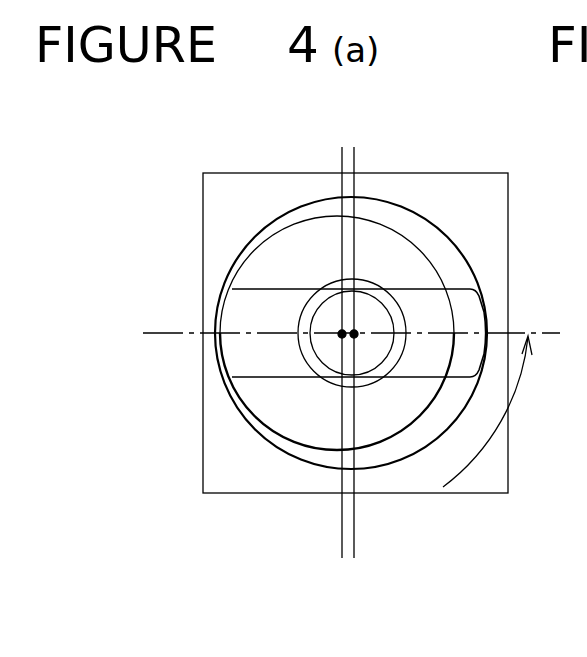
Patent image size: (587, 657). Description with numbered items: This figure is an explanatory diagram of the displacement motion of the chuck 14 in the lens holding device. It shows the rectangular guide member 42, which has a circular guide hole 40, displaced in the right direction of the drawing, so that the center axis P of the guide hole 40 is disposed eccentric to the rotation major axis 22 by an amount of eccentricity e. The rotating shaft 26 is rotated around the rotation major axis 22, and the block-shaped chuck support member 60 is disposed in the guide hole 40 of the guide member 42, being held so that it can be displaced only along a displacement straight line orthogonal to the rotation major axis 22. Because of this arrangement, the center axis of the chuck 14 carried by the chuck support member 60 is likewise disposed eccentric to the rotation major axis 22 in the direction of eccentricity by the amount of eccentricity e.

The chuck 14 is at (317, 291).
The rotation major axis 22 is at (334, 331).
The rotating shaft 26 is at (413, 258).
The guide hole 40 is at (416, 213).
The guide member 42 is at (221, 211).
The chuck support member 60 is at (268, 365).
The center axis of the guide hole P is at (360, 330).
The amount of eccentricity e is at (293, 530).